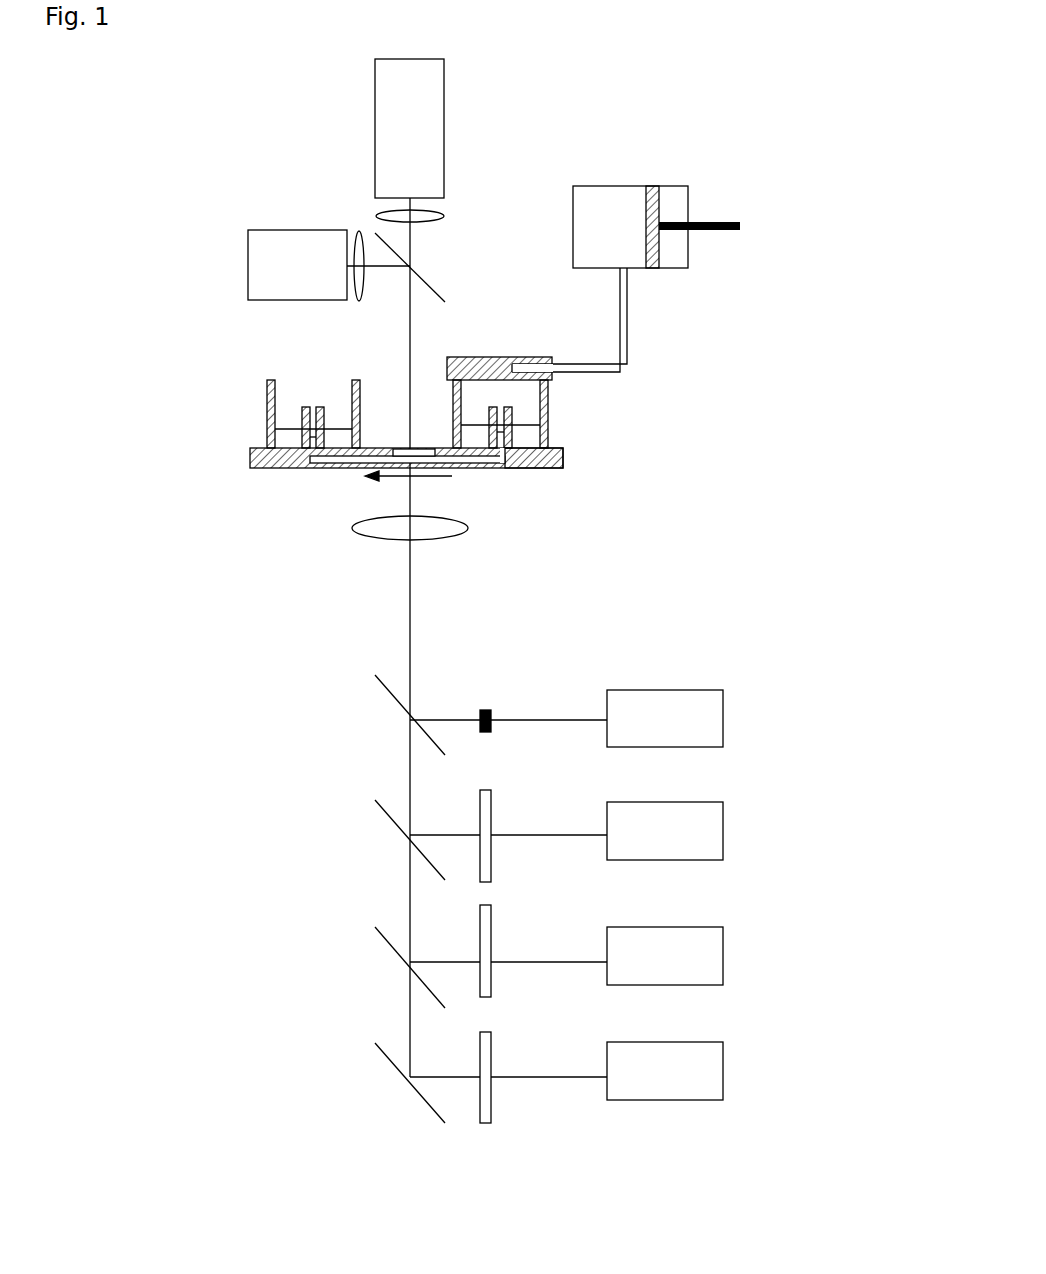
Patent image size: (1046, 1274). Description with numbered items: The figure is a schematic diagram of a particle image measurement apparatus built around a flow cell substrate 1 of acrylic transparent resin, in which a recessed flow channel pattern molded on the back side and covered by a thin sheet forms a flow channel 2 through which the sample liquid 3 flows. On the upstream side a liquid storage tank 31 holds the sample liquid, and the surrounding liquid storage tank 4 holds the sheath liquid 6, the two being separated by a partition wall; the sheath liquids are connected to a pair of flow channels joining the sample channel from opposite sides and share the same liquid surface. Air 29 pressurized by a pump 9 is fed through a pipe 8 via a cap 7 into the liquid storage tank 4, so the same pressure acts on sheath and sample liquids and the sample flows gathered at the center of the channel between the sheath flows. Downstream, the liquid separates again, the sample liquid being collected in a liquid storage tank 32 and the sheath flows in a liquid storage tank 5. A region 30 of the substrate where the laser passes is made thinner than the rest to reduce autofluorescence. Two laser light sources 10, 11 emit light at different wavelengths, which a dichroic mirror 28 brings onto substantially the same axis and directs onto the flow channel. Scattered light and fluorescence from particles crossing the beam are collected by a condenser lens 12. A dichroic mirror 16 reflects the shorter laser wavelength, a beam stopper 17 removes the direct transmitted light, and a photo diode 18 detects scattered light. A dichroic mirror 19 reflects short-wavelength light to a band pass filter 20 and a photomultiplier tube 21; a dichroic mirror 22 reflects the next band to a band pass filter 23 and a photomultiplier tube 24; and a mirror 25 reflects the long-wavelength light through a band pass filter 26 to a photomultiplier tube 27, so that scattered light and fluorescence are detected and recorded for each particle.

The flow cell substrate 1 is at (397, 454).
The flow channel 2 is at (497, 476).
The sample liquid 3 is at (615, 466).
The liquid storage tank 4 is at (672, 391).
The liquid storage tank 5 is at (171, 414).
The sheath liquid 6 is at (513, 331).
The cap 7 is at (500, 304).
The pipe 8 is at (670, 320).
The pump 9 is at (749, 168).
The laser light source 10 is at (230, 233).
The laser light source 11 is at (320, 132).
The condenser lens 12 is at (310, 574).
The dichroic mirror 16 is at (292, 725).
The beam stopper 17 is at (541, 691).
The photo diode 18 is at (731, 695).
The dichroic mirror 19 is at (323, 871).
The band pass filter 20 is at (549, 822).
The photomultiplier tube 21 is at (733, 816).
The dichroic mirror 22 is at (321, 997).
The band pass filter 23 is at (550, 940).
The photomultiplier tube 24 is at (729, 939).
The mirror 25 is at (321, 1114).
The band pass filter 26 is at (546, 1061).
The photomultiplier tube 27 is at (729, 1060).
The dichroic mirror 28 is at (480, 192).
The air 29 is at (630, 136).
The region 30 is at (387, 389).
The liquid storage tank 31 is at (655, 439).
The liquid storage tank 32 is at (266, 380).